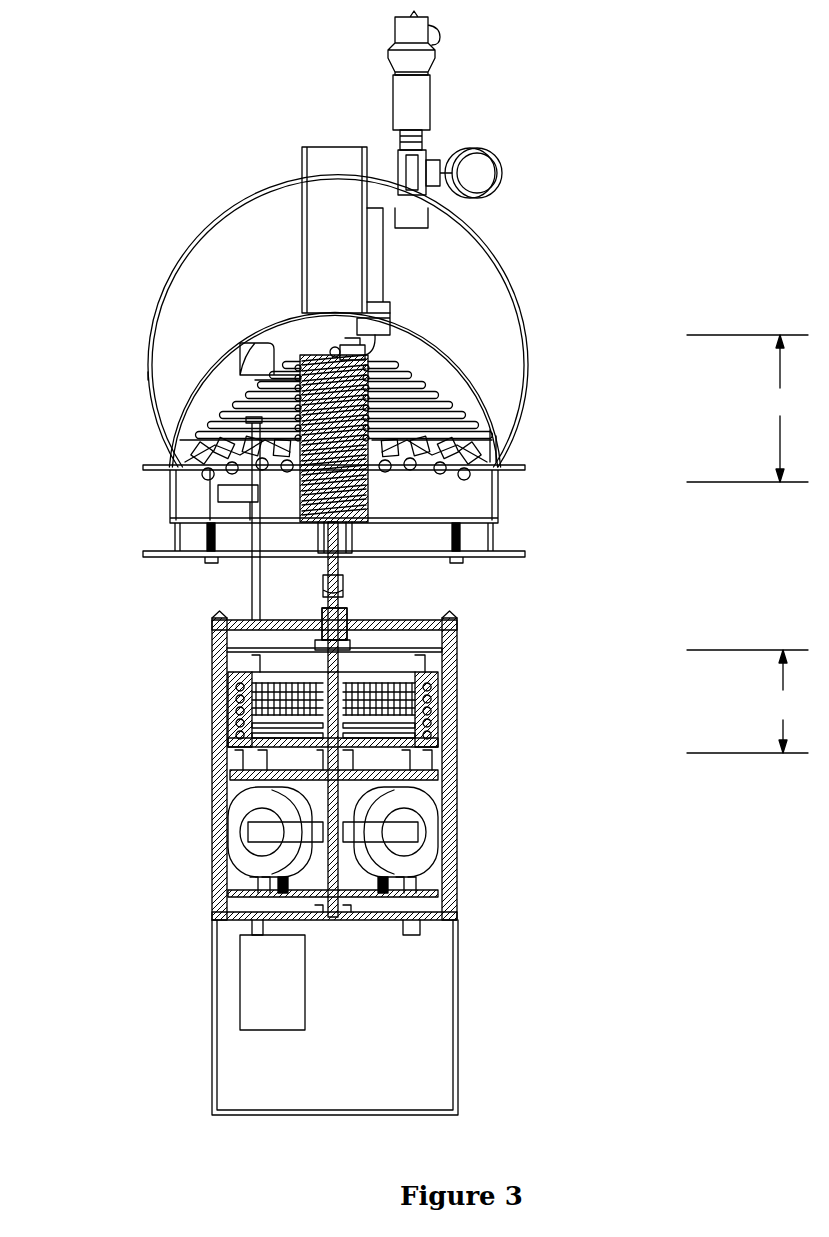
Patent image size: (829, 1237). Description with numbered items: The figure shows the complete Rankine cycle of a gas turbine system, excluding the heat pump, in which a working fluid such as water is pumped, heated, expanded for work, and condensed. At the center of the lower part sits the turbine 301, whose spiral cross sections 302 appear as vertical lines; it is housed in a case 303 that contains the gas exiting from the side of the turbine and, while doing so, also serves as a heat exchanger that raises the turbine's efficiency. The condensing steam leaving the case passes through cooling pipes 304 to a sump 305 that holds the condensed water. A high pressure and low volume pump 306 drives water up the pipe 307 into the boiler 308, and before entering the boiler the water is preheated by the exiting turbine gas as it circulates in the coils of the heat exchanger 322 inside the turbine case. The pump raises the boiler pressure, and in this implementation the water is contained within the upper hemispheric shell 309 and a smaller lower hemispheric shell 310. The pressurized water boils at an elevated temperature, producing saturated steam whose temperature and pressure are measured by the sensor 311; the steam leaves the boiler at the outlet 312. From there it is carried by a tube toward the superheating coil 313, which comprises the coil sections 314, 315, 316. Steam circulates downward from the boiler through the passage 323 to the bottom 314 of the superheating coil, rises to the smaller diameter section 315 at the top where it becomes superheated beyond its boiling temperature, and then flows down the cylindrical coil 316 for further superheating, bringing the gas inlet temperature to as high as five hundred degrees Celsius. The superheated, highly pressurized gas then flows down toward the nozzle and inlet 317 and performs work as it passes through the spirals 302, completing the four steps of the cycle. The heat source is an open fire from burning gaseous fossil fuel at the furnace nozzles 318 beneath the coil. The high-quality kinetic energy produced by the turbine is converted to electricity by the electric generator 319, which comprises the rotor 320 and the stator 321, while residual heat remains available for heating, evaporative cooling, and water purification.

The turbine 301 is at (747, 701).
The spiral cross sections 302 is at (378, 705).
The case 303 is at (448, 737).
The cooling pipes 304 is at (425, 928).
The sump 305 is at (415, 1083).
The high pressure and low volume pump 306 is at (240, 1008).
The pipe 307 is at (250, 590).
The boiler 308 is at (195, 288).
The upper hemispheric shell 309 is at (146, 378).
The lower hemispheric shell 310 is at (183, 400).
The sensor 311 is at (478, 175).
The outlet 312 is at (390, 208).
The superheating coil 313 is at (747, 408).
The bottom coil section 314 is at (495, 443).
The smaller diameter coil section 315 is at (330, 367).
The cylindrical coil 316 is at (385, 400).
The nozzle and inlet 317 is at (360, 614).
The furnace nozzles 318 is at (195, 448).
The electric generator 319 is at (448, 815).
The rotor 320 is at (260, 832).
The stator 321 is at (262, 865).
The heat exchanger 322 is at (237, 713).
The steam passage 323 is at (330, 352).